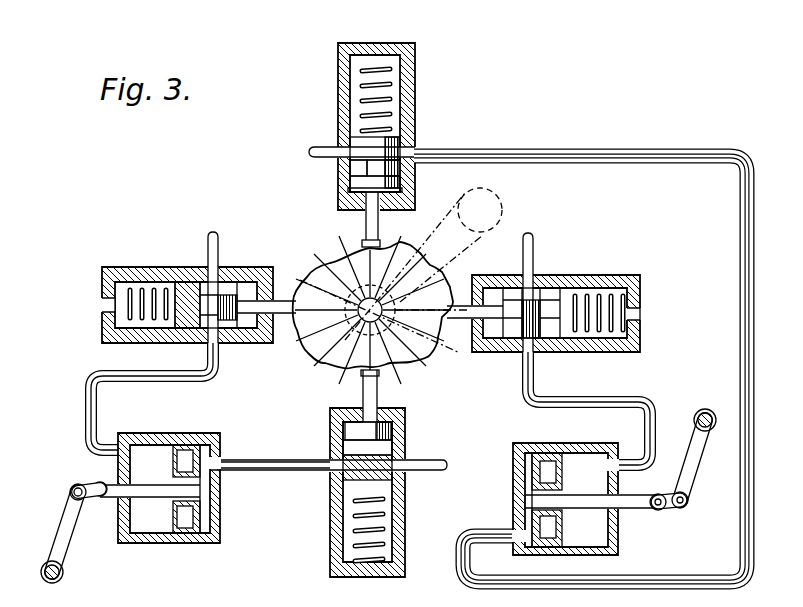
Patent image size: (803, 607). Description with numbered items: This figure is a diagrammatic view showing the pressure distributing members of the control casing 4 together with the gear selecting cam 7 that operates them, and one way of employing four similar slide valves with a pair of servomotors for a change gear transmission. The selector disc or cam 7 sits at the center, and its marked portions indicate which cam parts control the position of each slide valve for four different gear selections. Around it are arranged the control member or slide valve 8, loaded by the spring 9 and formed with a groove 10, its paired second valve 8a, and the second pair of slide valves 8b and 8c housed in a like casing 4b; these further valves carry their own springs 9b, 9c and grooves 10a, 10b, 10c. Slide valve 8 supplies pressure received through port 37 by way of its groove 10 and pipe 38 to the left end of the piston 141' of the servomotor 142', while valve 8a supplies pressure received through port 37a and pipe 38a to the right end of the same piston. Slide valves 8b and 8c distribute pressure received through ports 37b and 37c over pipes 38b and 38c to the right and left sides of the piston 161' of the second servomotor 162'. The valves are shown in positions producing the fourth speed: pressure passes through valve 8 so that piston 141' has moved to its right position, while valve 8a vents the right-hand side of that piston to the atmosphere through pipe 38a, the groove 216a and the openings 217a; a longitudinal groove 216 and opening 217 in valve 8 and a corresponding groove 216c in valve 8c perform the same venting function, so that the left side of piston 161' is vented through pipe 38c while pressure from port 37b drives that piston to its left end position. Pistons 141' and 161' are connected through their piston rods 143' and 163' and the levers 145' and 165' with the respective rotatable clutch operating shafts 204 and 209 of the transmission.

The control casing 4 is at (128, 268).
The cylinder 4b is at (556, 313).
The selector disc 7 is at (300, 346).
The control member 8 is at (203, 330).
The second valve 8a is at (405, 480).
The slide valve 8b is at (552, 342).
The slide valve 8c is at (350, 170).
The spring 9 is at (128, 318).
The spring 9b is at (599, 313).
The spring 9c is at (376, 100).
The groove 10 is at (230, 343).
The piston head 10a is at (352, 443).
The piston head 10b is at (515, 340).
The piston head 10c is at (358, 186).
The port 37 is at (210, 252).
The port 37a is at (430, 464).
The port 37b is at (535, 264).
The piston rod 37c is at (320, 152).
The pipe 38 is at (220, 380).
The pipe 38a is at (270, 471).
The pipe 38b is at (522, 380).
The pipe 38c is at (465, 150).
The longitudinal groove 216 is at (182, 342).
The groove 216a is at (343, 482).
The cylinder body 216c is at (376, 127).
The opening 217 is at (103, 301).
The openings 217a is at (372, 577).
The piston 141' is at (272, 504).
The servomotor 142' is at (169, 498).
The piston rod 143' is at (150, 489).
The lever 145' is at (59, 527).
The piston 161' is at (493, 500).
The second servomotor 162' is at (565, 508).
The piston rod 163' is at (592, 500).
The lever 165' is at (681, 475).
The rotatable operating shaft 204 is at (52, 582).
The rotatable operating shaft 209 is at (707, 409).